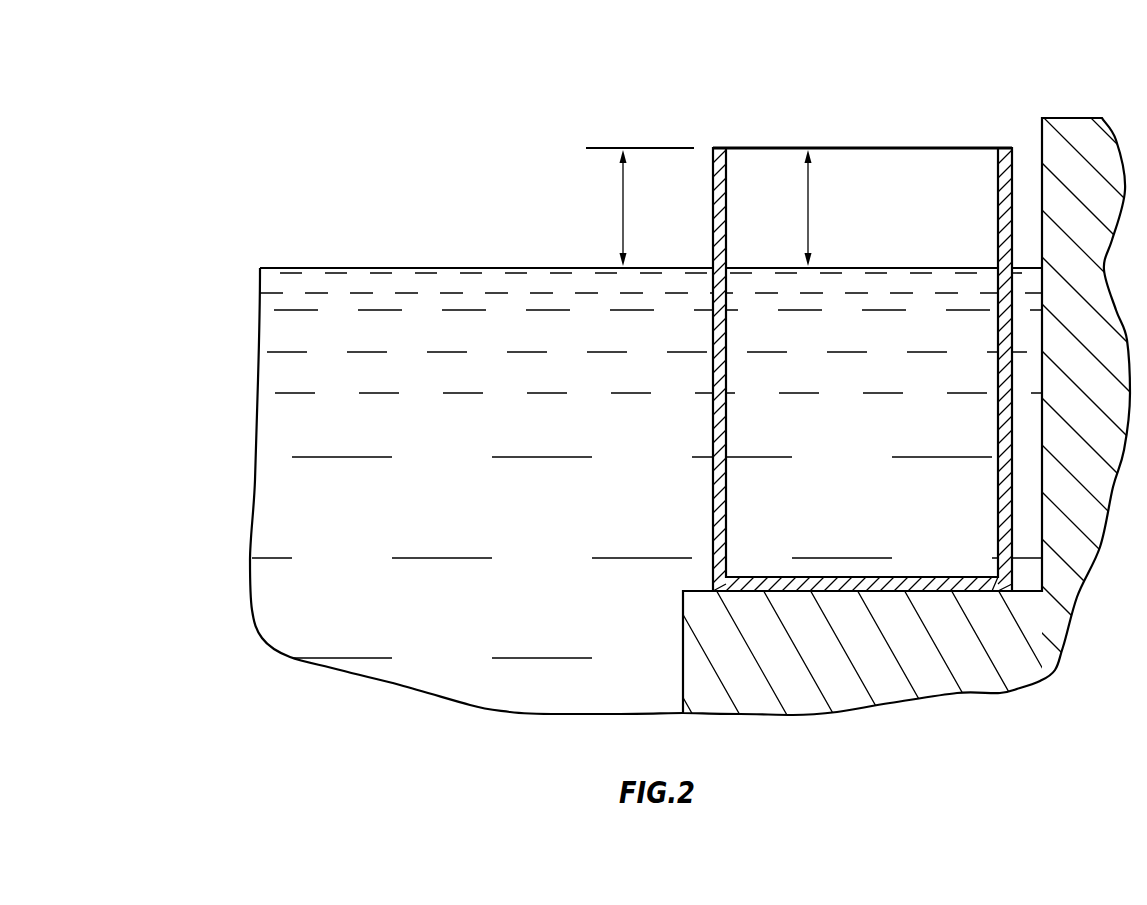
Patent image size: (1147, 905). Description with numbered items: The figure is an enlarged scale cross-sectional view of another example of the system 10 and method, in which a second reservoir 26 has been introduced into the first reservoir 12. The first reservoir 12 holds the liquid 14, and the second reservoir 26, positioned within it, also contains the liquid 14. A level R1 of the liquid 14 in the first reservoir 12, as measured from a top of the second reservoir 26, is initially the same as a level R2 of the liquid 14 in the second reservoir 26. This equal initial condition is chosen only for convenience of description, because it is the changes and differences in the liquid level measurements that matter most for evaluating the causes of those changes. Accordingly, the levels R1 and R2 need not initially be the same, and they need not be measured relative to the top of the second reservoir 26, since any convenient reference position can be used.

The system 10 is at (261, 92).
The first reservoir 12 is at (1040, 124).
The liquid 14 is at (313, 267).
The second reservoir 26 is at (997, 170).
The level of the liquid in the first reservoir R1 is at (622, 192).
The level of the liquid in the second reservoir R2 is at (808, 187).